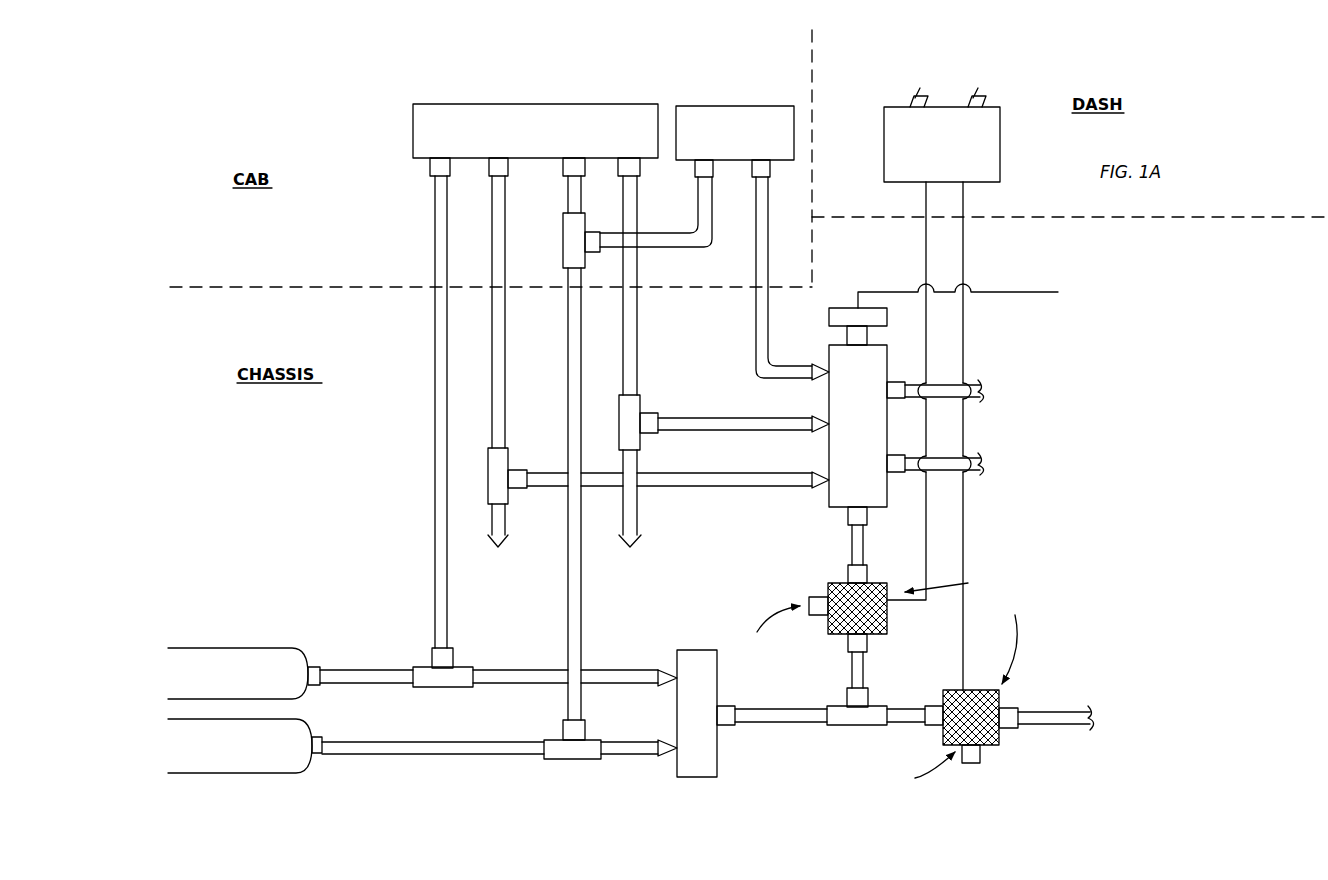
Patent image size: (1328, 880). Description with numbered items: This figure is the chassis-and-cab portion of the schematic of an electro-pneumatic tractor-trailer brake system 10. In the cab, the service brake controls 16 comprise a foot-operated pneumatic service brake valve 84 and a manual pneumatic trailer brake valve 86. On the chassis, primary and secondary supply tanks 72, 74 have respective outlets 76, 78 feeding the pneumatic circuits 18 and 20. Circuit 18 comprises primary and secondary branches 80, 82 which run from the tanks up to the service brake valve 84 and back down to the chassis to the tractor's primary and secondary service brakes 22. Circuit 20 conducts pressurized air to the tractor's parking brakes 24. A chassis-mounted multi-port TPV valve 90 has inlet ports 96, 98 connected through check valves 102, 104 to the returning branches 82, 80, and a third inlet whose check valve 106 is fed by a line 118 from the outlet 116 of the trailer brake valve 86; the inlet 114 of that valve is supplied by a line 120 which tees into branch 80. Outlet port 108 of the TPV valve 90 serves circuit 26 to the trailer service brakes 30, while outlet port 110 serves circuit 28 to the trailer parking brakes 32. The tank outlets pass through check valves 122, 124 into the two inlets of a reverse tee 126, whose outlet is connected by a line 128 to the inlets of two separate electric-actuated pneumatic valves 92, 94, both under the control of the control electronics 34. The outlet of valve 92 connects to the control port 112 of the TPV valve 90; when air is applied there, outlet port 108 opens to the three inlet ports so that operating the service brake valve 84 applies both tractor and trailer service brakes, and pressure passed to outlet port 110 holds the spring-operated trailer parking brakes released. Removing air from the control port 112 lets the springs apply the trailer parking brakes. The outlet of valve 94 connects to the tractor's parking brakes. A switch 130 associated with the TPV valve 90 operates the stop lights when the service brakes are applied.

The electro-pneumatic tractor-trailer brake system 10 is at (320, 80).
The service brake controls 16 is at (378, 218).
The pneumatic circuit 18 is at (567, 632).
The pneumatic circuit 20 is at (605, 686).
The tractor service brakes 22 is at (506, 520).
The tractor parking brakes 24 is at (1148, 721).
The pneumatic circuit 26 is at (942, 384).
The pneumatic circuit 28 is at (942, 474).
The trailer service brakes 30 is at (1086, 386).
The trailer parking brakes 32 is at (1084, 464).
The control electronics 34 is at (990, 115).
The primary supply tank 72 is at (288, 766).
The secondary supply tank 74 is at (265, 648).
The tank outlet 76 is at (320, 756).
The tank outlet 78 is at (315, 666).
The primary branch 80 is at (632, 368).
The secondary branch 82 is at (434, 345).
The service brake valve 84 is at (498, 105).
The trailer brake valve 86 is at (730, 108).
The multi-port pneumatic valve 90 is at (858, 426).
The electric-actuated pneumatic valve 92 is at (828, 585).
The electric-actuated pneumatic valve 94 is at (1000, 700).
The inlet port 96 is at (826, 500).
The inlet port 98 is at (824, 438).
The check valve 102 is at (810, 490).
The check valve 104 is at (762, 417).
The check valve 106 is at (815, 360).
The outlet port 108 is at (895, 378).
The outlet port 110 is at (826, 380).
The control port 112 is at (870, 517).
The inlet 114 is at (714, 170).
The outlet 116 is at (772, 170).
The line 118 is at (756, 322).
The line 120 is at (686, 244).
The check valve 122 is at (665, 758).
The check valve 124 is at (668, 665).
The reverse tee 126 is at (700, 765).
The line 128 is at (820, 724).
The switch 130 is at (836, 308).